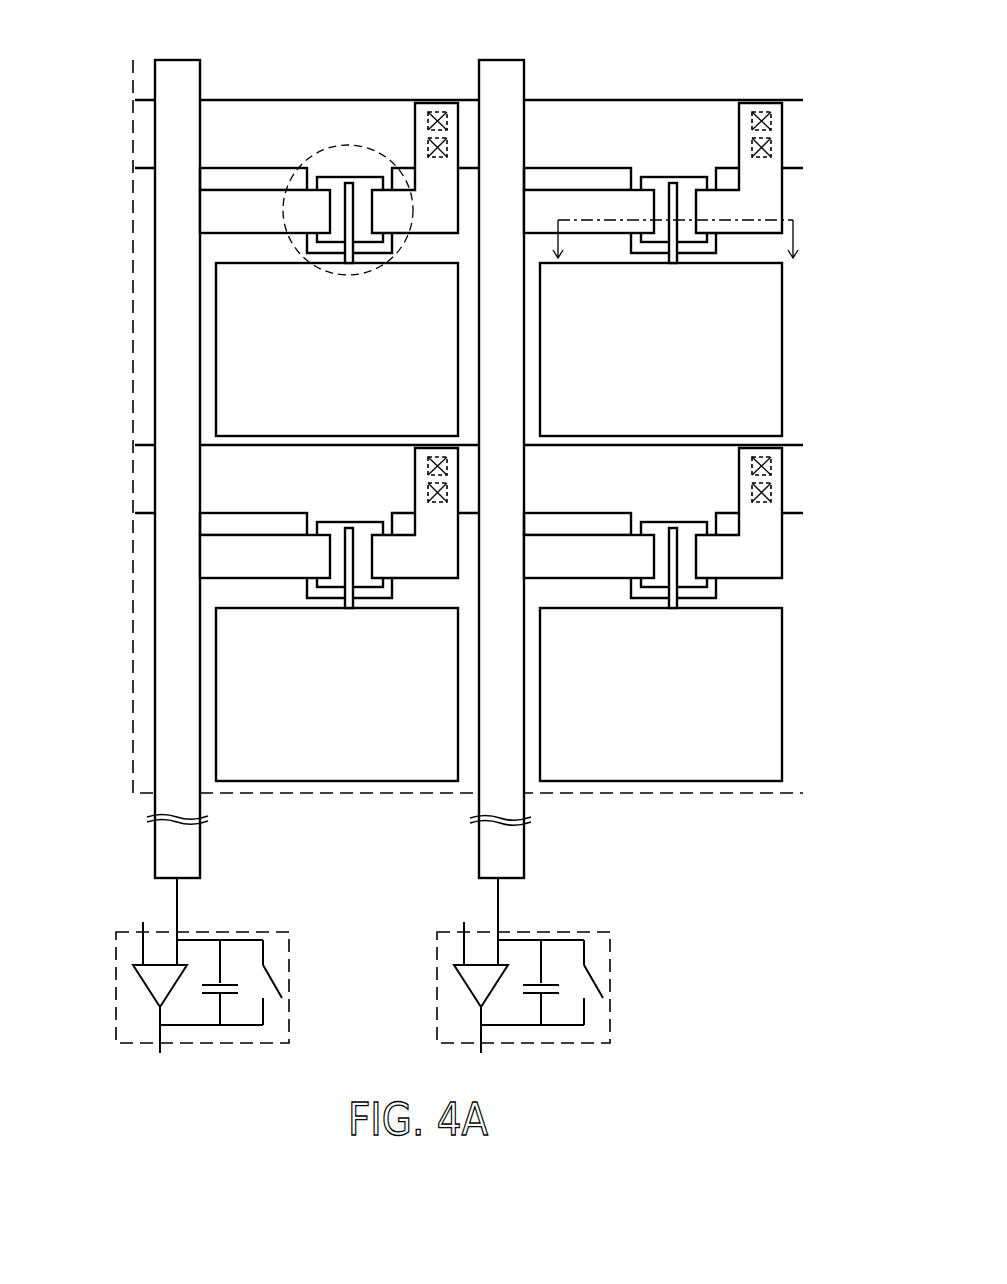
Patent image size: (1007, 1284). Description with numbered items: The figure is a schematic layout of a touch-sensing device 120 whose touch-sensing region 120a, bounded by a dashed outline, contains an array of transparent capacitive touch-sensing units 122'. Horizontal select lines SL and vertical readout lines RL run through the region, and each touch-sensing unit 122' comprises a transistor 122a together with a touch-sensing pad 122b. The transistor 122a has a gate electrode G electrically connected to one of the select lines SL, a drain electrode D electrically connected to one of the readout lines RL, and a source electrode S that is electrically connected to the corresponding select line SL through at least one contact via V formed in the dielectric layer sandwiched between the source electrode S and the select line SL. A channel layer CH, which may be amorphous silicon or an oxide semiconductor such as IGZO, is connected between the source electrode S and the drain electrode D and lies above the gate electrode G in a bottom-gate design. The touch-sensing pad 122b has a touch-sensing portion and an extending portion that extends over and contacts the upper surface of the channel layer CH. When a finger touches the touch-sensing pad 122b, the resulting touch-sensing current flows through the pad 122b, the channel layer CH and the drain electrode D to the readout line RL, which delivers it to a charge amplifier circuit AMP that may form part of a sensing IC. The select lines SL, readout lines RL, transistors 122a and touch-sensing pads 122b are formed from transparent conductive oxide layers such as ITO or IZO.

The touch-sensing device 120 is at (424, 539).
The touch-sensing region 120a is at (133, 678).
The capacitive touch-sensing unit 122' is at (245, 230).
The transistor 122a is at (204, 211).
The touch-sensing pad 122b is at (235, 312).
The readout line RL is at (183, 70).
The select line SL is at (290, 115).
The channel layer CH is at (362, 185).
The drain electrode D is at (265, 211).
The source electrode S is at (402, 226).
The gate electrode G is at (370, 248).
The contact via V is at (442, 113).
The charge amplifier circuit AMP is at (291, 982).